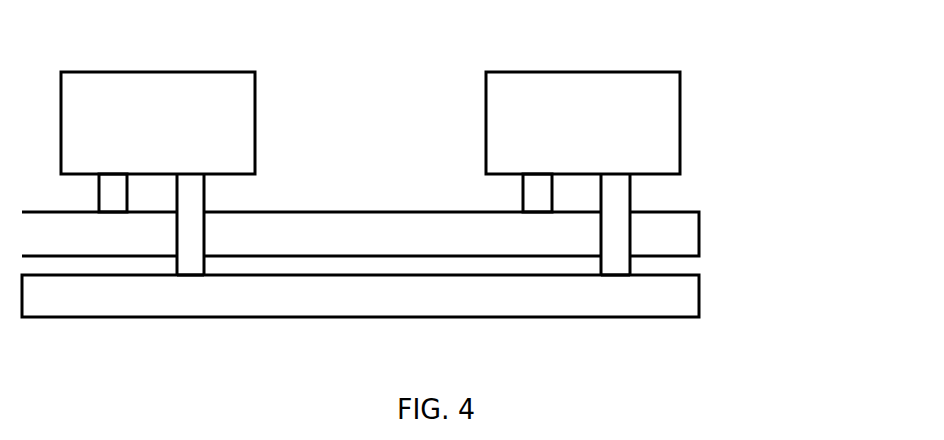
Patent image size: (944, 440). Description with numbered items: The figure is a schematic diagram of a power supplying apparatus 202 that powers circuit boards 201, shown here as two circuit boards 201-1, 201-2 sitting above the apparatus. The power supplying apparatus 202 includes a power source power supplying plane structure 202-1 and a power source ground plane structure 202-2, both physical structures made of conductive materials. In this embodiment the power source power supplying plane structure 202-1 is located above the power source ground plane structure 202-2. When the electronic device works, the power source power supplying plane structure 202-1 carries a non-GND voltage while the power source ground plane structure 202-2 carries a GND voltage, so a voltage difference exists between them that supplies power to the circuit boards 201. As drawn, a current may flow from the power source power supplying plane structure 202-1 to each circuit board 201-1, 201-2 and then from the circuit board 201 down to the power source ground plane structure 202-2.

The circuit board 201 is at (370, 142).
The circuit board 201-1 is at (158, 142).
The circuit board 201-2 is at (583, 142).
The power supplying apparatus 202 is at (455, 249).
The power source power supplying plane structure 202-1 is at (455, 202).
The power source ground plane structure 202-2 is at (447, 301).